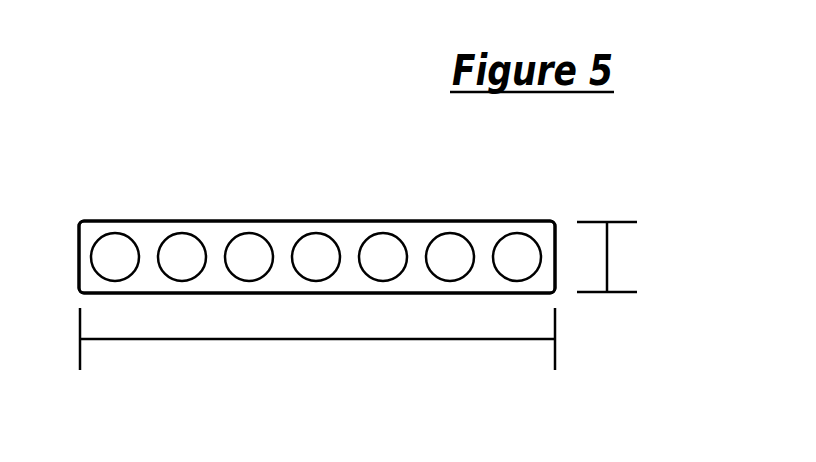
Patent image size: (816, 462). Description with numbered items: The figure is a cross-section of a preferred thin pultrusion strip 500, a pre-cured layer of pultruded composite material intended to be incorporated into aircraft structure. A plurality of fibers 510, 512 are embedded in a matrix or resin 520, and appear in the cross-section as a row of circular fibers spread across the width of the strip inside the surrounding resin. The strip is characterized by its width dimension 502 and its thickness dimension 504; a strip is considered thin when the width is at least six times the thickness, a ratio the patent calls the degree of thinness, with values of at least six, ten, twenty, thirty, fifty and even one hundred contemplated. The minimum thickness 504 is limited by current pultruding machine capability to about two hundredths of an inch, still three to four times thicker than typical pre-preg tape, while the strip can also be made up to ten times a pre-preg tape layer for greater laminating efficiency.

The pultrusion strip 500 is at (122, 188).
The width dimension 502 is at (210, 340).
The thickness dimension 504 is at (607, 270).
The fiber 510 is at (184, 233).
The fiber 512 is at (258, 233).
The matrix or resin 520 is at (430, 222).